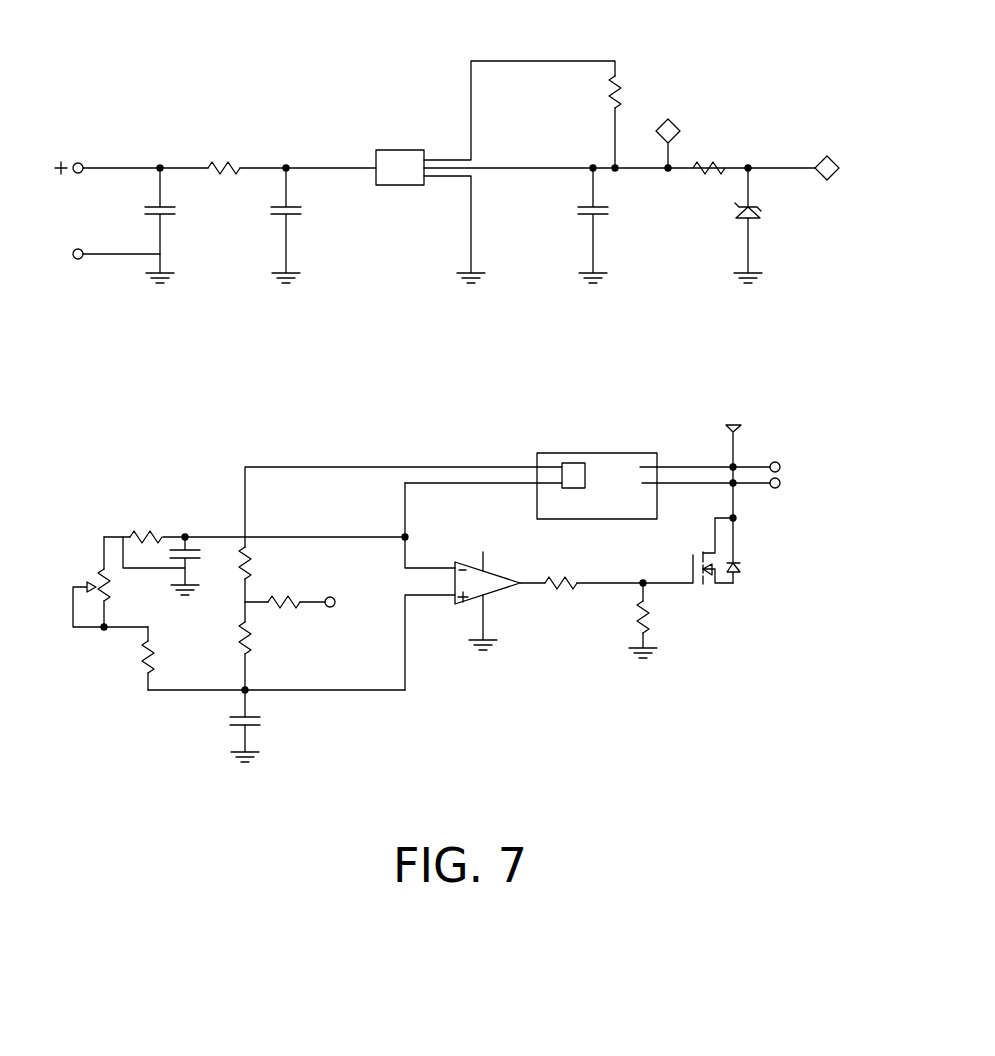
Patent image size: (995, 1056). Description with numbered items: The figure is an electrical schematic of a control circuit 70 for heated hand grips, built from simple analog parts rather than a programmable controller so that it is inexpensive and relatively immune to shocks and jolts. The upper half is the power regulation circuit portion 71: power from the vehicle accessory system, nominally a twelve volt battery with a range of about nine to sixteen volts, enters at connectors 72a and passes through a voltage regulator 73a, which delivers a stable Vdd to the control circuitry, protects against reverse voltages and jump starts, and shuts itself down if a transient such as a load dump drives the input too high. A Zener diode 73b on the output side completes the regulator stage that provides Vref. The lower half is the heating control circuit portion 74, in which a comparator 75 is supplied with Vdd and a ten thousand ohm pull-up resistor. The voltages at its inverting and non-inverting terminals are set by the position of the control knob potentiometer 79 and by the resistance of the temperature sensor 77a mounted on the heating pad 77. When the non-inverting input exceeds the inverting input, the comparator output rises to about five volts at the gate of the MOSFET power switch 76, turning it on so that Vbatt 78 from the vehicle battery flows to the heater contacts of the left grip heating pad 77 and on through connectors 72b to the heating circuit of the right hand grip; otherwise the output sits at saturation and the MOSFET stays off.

The control circuit 70 is at (640, 680).
The power regulation circuit portion 71 is at (343, 67).
The connectors 72a is at (88, 105).
The connectors 72b is at (808, 432).
The voltage regulator 73a is at (397, 186).
The Zener diode 73b is at (812, 212).
The heating control circuit portion 74 is at (110, 732).
The comparator 75 is at (460, 644).
The MOSFET power switch 76 is at (745, 622).
The heating pad 77 is at (614, 453).
The temperature sensor 77a is at (572, 462).
The Vbatt 78 is at (745, 394).
The control knob potentiometer 79 is at (82, 628).